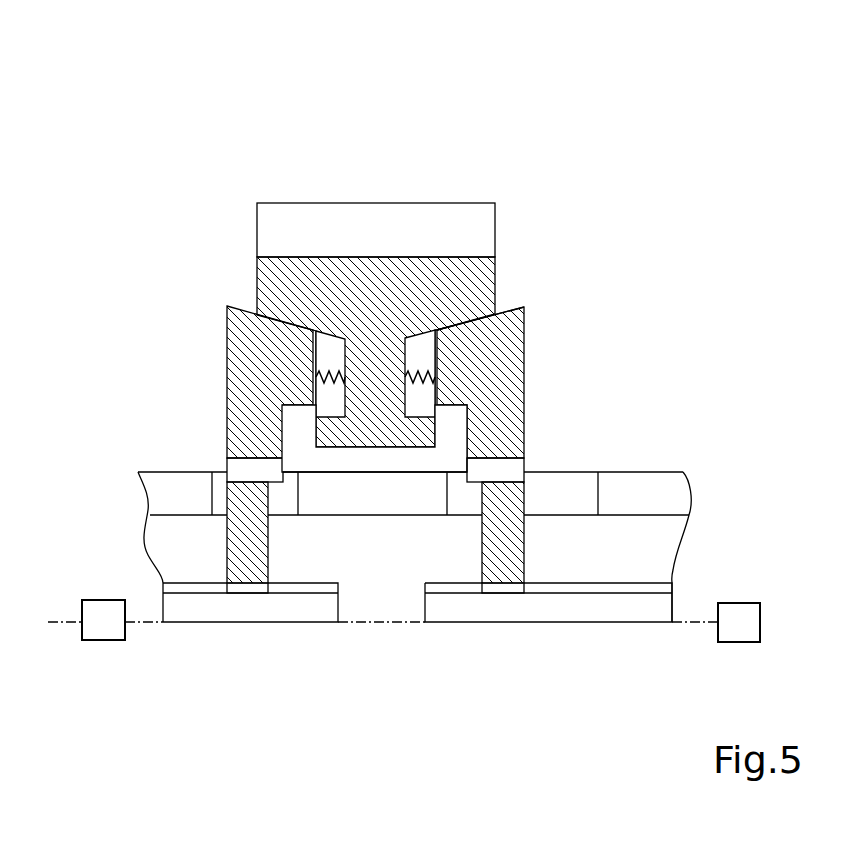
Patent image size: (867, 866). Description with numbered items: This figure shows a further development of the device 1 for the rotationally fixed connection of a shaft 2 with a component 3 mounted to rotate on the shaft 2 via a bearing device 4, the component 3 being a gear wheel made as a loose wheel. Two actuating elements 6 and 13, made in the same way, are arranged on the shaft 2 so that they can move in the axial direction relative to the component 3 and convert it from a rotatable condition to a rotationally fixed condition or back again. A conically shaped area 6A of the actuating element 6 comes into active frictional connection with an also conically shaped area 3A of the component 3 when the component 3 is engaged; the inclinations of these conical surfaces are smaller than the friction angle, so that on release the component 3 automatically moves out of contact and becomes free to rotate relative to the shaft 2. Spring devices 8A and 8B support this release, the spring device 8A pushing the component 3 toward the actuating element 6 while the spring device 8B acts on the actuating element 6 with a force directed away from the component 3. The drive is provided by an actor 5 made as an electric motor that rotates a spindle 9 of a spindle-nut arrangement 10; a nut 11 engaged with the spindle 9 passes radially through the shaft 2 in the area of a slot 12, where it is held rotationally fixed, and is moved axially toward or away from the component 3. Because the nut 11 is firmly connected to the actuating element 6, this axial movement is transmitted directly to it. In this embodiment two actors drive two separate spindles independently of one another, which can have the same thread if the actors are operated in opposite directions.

The device 1 is at (262, 94).
The shaft 2 is at (412, 477).
The component 3 is at (262, 279).
The area 3A is at (416, 330).
The bearing device 4 is at (400, 457).
The actor 5 is at (93, 612).
The actuating element 6 is at (562, 284).
The area 6A is at (509, 312).
The spring device 8A is at (317, 377).
The spring device 8B is at (412, 380).
The spindle 9 is at (383, 649).
The spindle-nut arrangement 10 is at (510, 611).
The nut 11 is at (515, 530).
The slot 12 is at (548, 488).
The actuating element 13 is at (250, 378).